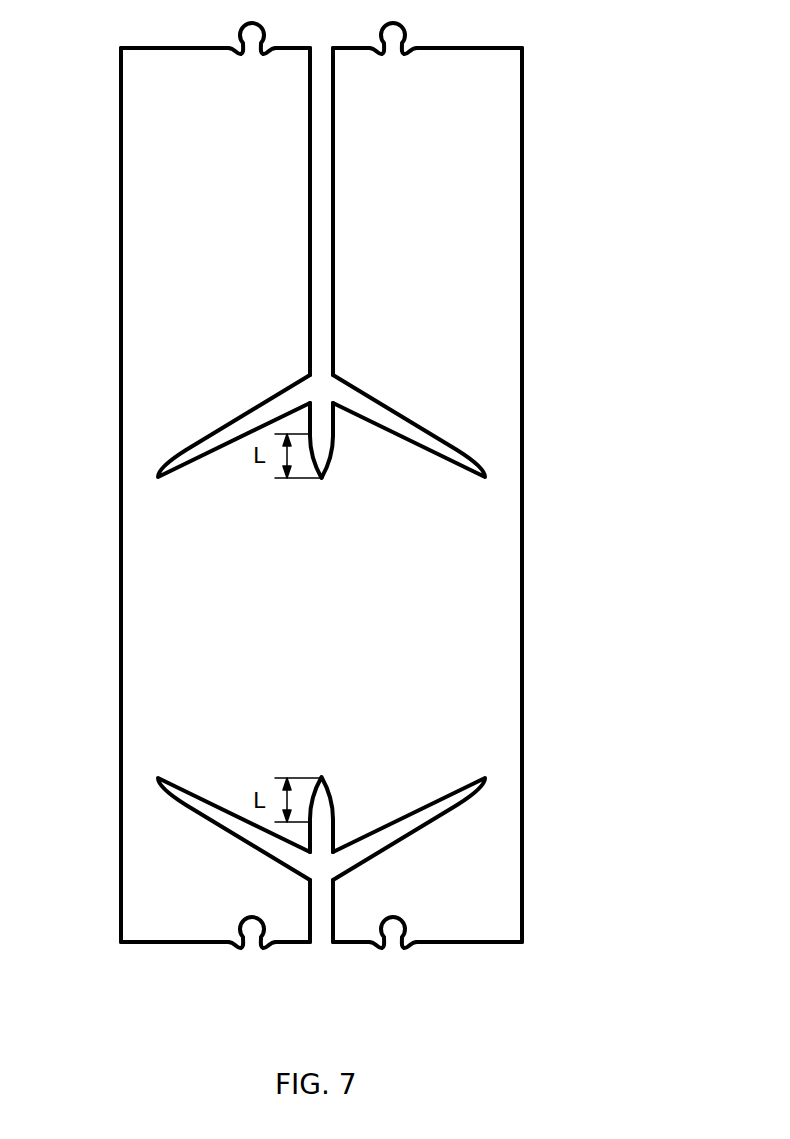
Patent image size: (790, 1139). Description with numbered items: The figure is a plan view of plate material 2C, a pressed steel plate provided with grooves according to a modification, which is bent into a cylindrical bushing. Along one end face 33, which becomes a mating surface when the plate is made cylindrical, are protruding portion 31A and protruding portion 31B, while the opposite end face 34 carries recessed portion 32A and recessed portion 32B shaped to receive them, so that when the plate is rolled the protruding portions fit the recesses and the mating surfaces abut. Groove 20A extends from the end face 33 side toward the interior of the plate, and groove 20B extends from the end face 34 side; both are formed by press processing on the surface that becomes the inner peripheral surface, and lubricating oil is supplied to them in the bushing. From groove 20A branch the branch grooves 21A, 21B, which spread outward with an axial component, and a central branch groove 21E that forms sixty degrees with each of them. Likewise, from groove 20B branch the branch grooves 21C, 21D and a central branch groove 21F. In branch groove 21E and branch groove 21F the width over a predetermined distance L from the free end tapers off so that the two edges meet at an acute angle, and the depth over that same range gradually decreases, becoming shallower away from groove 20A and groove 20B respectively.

The plate material 2C is at (548, 123).
The groove 20A is at (327, 203).
The groove 20B is at (321, 918).
The branch groove 21A is at (400, 430).
The branch groove 21B is at (250, 422).
The branch groove 21C is at (443, 805).
The branch groove 21D is at (195, 798).
The branch groove 21E is at (325, 458).
The branch groove 21F is at (326, 806).
The protruding portion 31A is at (249, 43).
The protruding portion 31B is at (391, 43).
The recessed portion 32A is at (255, 935).
The recessed portion 32B is at (398, 935).
The end face 33 is at (457, 48).
The end face 34 is at (488, 943).